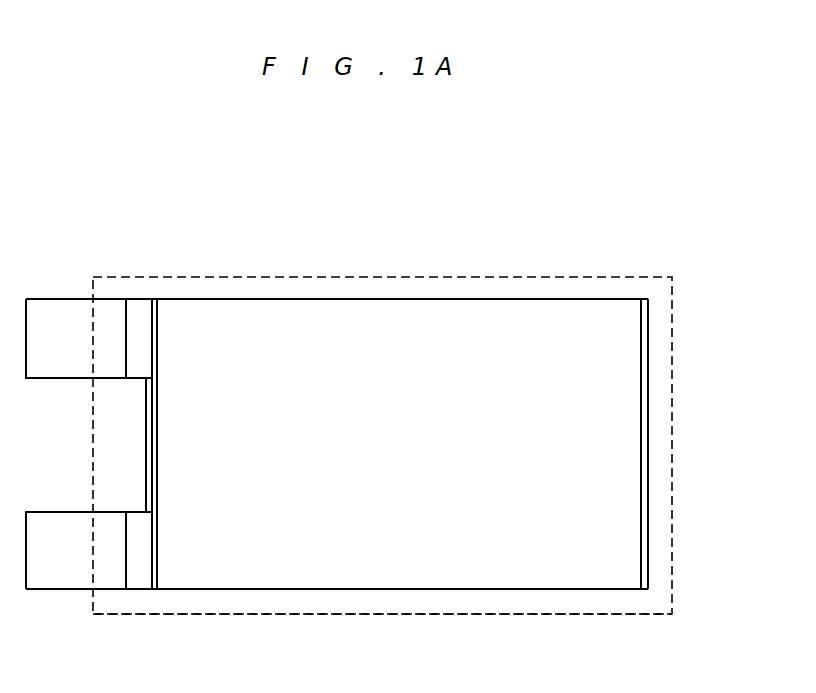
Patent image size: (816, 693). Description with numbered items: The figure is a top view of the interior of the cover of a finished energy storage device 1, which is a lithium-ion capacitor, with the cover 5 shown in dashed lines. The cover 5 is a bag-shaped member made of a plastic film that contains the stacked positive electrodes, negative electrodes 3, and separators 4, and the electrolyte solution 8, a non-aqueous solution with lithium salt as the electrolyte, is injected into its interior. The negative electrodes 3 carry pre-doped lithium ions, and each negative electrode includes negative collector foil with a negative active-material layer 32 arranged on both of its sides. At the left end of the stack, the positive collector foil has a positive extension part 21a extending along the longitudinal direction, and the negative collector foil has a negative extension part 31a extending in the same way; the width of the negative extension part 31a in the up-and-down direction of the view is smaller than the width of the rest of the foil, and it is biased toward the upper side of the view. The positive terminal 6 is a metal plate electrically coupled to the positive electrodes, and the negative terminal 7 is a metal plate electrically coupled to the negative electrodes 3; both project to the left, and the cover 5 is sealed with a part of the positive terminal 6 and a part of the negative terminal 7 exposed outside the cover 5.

The finished energy storage device 1 is at (686, 255).
The positive extension part 21a is at (145, 582).
The negative electrode 3 is at (154, 444).
The negative extension part 31a is at (145, 303).
The negative active-material layer 32 is at (233, 307).
The separator 4 is at (646, 415).
The cover 5 is at (360, 277).
The positive terminal 6 is at (67, 570).
The negative terminal 7 is at (67, 305).
The electrolyte solution 8 is at (525, 603).